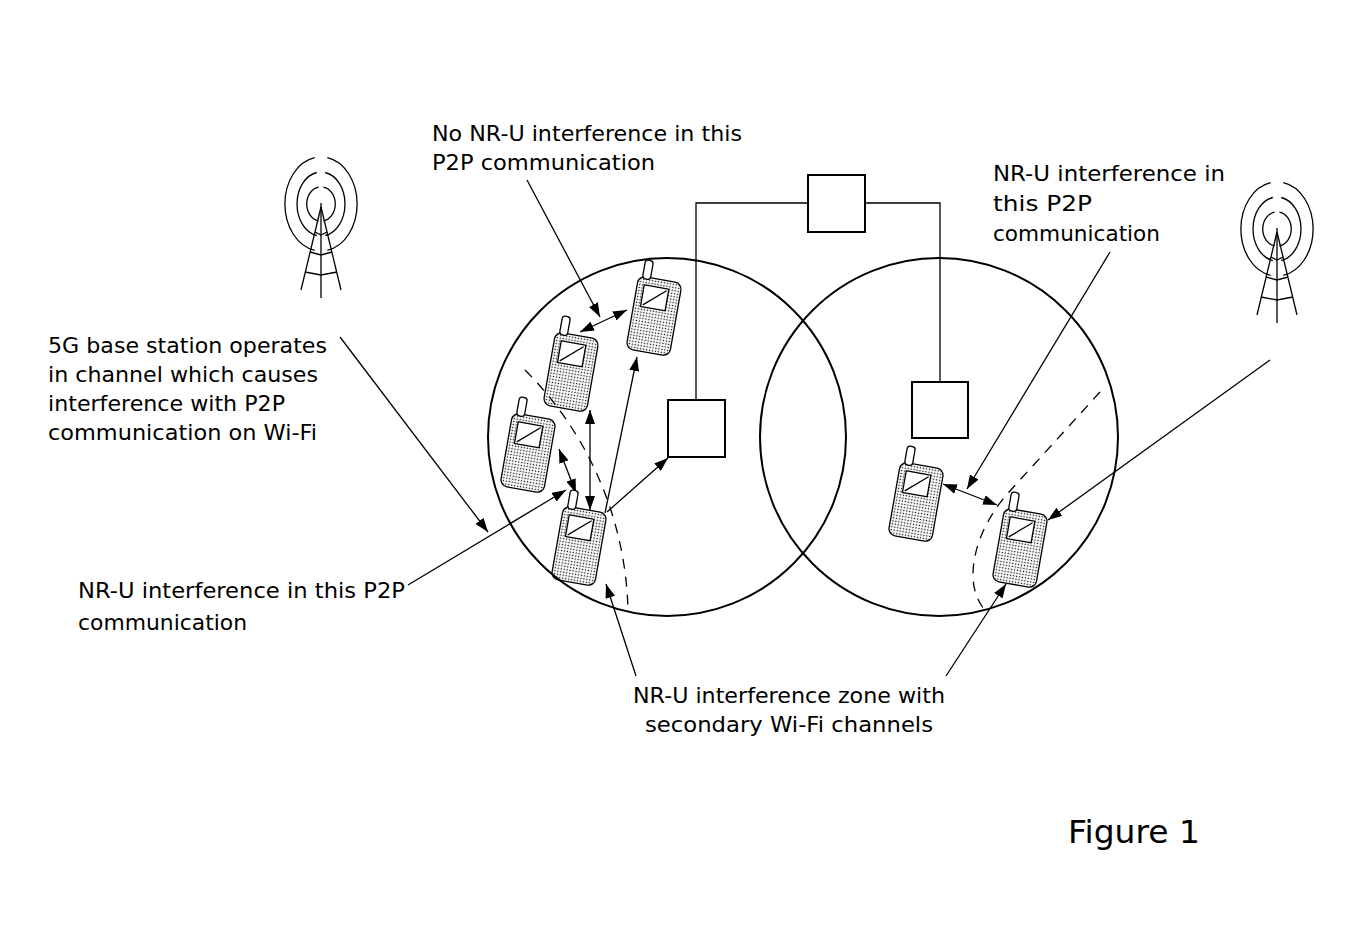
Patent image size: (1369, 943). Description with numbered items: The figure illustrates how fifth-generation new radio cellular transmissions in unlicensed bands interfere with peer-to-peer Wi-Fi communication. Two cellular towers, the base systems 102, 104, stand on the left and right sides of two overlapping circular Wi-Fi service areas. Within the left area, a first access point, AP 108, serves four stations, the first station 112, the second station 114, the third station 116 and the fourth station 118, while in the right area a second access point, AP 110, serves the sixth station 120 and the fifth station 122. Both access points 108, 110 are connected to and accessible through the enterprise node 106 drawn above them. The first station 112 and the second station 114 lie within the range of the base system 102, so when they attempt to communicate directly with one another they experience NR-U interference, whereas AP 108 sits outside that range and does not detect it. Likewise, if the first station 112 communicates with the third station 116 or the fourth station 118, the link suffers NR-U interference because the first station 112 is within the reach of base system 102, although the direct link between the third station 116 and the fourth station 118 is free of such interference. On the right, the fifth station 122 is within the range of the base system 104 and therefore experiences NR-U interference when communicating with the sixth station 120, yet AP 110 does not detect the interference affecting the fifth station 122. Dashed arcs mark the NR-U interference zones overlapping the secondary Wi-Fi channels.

The 5G base system 102 is at (350, 288).
The 5G base system 104 is at (1303, 315).
The enterprise node 106 is at (884, 178).
The AP 108 is at (726, 399).
The AP 110 is at (969, 391).
The STA 1 112 is at (559, 585).
The STA 2 114 is at (503, 450).
The STA 3 116 is at (541, 332).
The STA 4 118 is at (662, 357).
The STA 6 120 is at (899, 534).
The STA 5 122 is at (1037, 513).